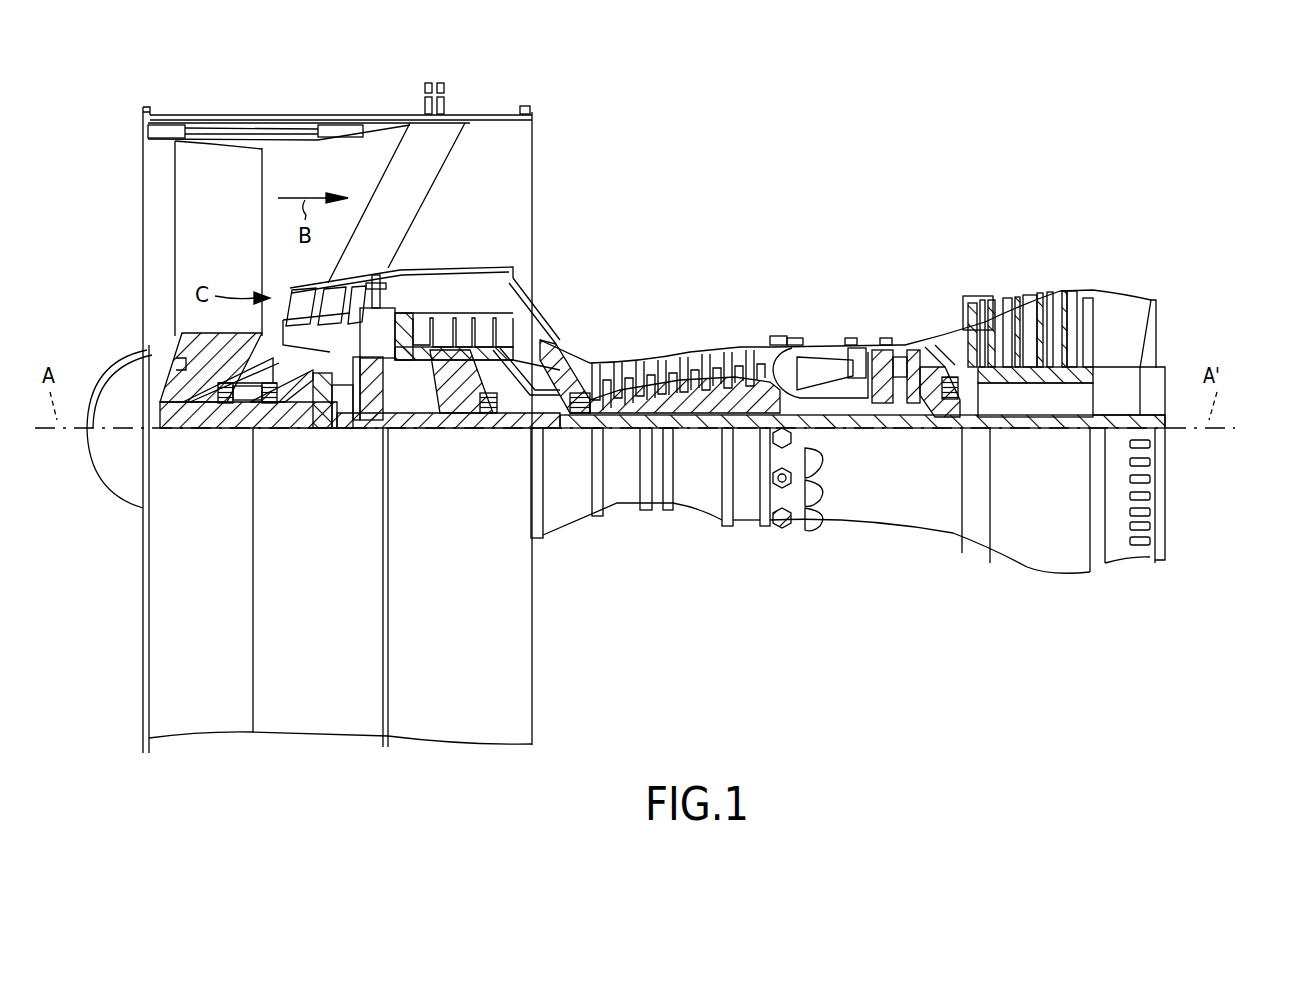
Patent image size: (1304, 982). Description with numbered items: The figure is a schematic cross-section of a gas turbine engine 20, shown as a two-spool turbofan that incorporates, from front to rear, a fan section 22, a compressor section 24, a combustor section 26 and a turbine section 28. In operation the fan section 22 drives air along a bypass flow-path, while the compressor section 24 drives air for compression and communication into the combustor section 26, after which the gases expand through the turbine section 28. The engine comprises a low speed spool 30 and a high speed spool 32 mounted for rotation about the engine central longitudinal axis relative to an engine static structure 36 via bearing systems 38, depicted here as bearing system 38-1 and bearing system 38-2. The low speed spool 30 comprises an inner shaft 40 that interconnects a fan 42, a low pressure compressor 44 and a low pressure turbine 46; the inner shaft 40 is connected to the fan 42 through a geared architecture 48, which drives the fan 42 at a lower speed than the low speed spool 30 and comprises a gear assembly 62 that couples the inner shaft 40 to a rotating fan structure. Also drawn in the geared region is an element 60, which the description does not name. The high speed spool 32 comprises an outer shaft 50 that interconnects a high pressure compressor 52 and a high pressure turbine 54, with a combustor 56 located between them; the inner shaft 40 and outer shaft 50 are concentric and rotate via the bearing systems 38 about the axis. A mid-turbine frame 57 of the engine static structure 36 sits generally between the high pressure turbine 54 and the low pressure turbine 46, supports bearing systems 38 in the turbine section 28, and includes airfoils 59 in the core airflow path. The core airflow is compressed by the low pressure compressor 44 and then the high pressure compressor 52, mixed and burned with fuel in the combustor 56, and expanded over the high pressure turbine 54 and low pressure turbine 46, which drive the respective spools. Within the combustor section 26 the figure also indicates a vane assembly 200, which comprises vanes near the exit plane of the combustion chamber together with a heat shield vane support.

The gas turbine engine 20 is at (882, 148).
The fan section 22 is at (386, 93).
The compressor section 24 is at (393, 228).
The combustor section 26 is at (878, 228).
The turbine section 28 is at (1095, 228).
The low speed spool 30 is at (704, 462).
The high speed spool 32 is at (745, 380).
The engine static structure 36 is at (122, 750).
The bearing system 38 is at (928, 412).
The bearing system 38-1 is at (230, 406).
The bearing system 38-2 is at (484, 412).
The inner shaft 40 is at (556, 430).
The fan 42 is at (227, 243).
The low pressure compressor section 44 is at (465, 320).
The low pressure turbine section 46 is at (1023, 310).
The geared architecture 48 is at (350, 450).
The outer shaft 50 is at (806, 403).
The high pressure compressor 52 is at (702, 352).
The high pressure turbine section 54 is at (895, 350).
The combustor 56 is at (830, 365).
The mid-turbine frame 57 is at (937, 352).
The airfoils 59 is at (963, 340).
The flexible coupling 60 is at (356, 405).
The gear assembly 62 is at (368, 372).
The vane assembly 200 is at (858, 345).